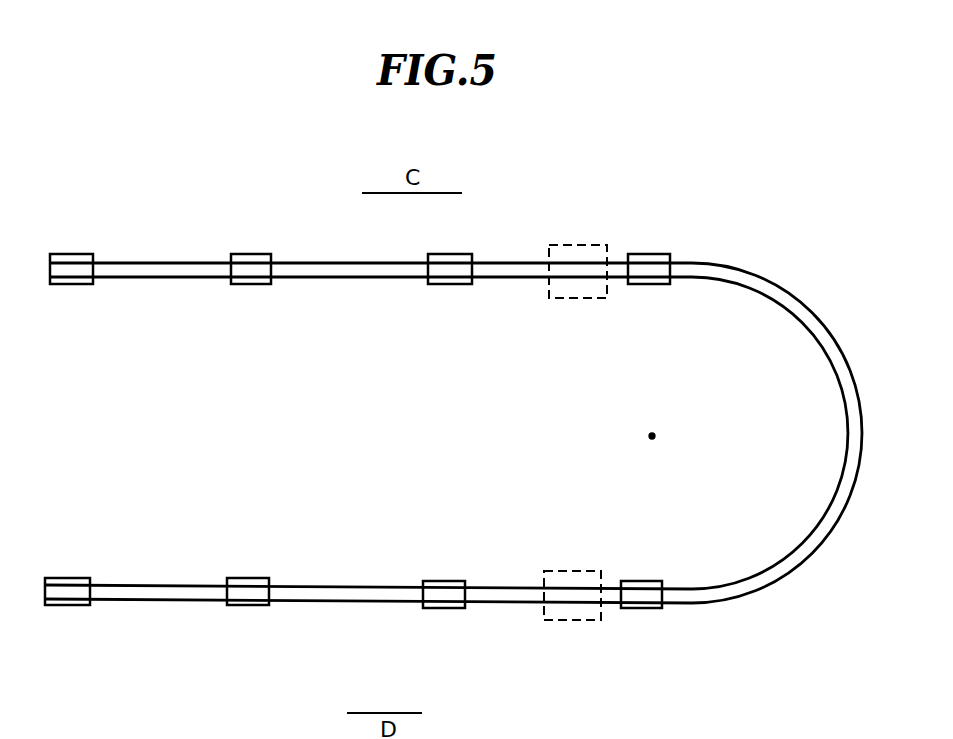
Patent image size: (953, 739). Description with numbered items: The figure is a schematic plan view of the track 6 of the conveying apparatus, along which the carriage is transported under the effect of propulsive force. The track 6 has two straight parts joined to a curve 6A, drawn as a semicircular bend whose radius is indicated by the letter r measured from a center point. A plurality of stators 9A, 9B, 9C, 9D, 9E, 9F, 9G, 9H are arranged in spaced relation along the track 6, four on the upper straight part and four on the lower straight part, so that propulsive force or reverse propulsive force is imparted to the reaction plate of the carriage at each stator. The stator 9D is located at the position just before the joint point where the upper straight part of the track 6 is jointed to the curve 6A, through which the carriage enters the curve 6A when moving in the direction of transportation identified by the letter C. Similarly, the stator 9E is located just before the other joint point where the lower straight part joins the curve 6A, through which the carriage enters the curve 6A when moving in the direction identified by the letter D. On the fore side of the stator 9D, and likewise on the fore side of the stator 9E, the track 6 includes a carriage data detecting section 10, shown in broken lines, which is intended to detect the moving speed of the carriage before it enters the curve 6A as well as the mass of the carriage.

The track 6 is at (365, 278).
The curve 6A is at (865, 430).
The radius of curved portion r is at (822, 347).
The stator 9A is at (80, 254).
The stator 9B is at (255, 254).
The stator 9C is at (463, 254).
The stator 9D is at (666, 255).
The stator 9E is at (657, 608).
The stator 9F is at (458, 608).
The stator 9G is at (266, 605).
The stator 9H is at (86, 605).
The carriage data detecting section 10 is at (588, 244).